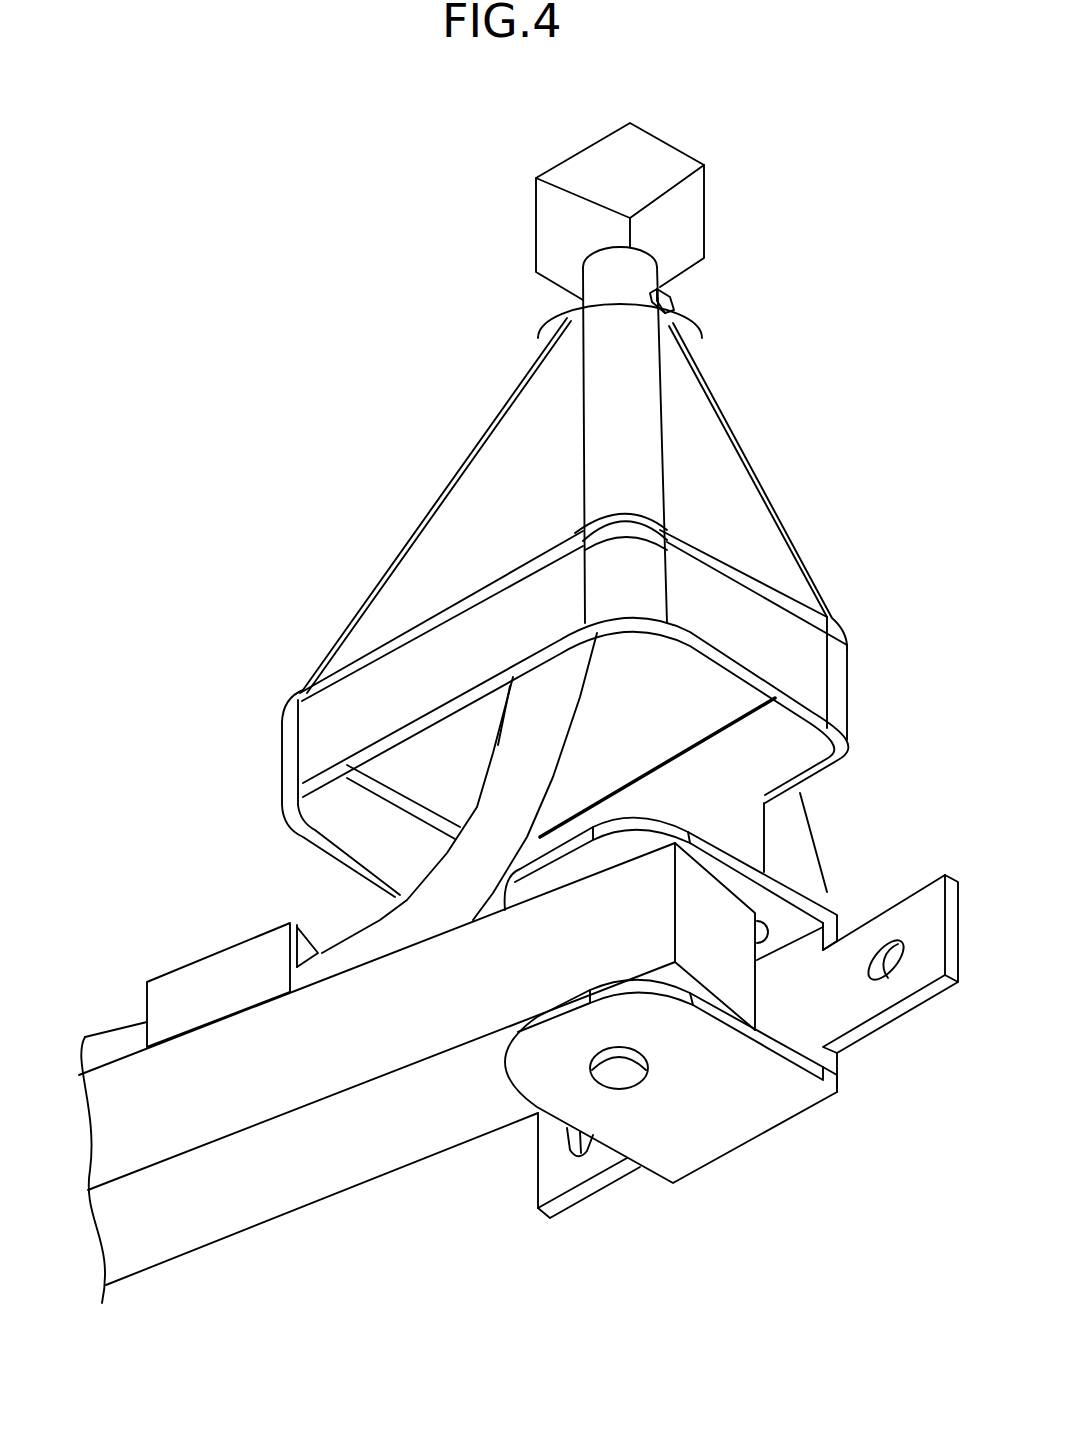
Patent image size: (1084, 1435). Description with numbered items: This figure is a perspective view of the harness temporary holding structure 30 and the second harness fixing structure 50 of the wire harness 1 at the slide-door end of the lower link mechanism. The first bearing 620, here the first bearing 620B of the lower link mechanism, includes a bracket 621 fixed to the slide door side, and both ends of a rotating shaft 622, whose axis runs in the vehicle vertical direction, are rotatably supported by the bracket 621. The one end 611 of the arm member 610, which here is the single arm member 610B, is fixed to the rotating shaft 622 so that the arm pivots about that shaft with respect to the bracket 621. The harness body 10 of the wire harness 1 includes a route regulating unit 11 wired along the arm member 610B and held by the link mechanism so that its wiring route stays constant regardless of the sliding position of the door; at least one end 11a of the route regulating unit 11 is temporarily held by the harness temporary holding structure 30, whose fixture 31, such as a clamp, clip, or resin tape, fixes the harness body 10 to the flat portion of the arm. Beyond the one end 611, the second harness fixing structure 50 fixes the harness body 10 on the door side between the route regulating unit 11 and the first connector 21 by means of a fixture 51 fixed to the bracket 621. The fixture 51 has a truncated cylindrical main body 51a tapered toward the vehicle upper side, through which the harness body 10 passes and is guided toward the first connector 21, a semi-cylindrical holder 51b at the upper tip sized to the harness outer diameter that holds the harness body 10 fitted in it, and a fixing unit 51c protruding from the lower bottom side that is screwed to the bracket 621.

The wire harness 1 is at (280, 140).
The harness body 10 is at (78, 1002).
The route regulating unit 11 is at (451, 1073).
The end of route regulating unit 11a is at (128, 1037).
The first connector 21 is at (578, 190).
The harness temporary holding structure 30 is at (218, 943).
The fixture 31 is at (207, 983).
The second harness fixing structure 50 is at (605, 618).
The fixture 51 is at (455, 372).
The main body 51a is at (470, 507).
The semi-cylindrical holder 51b is at (677, 302).
The fixing unit 51c is at (800, 848).
The arm member 610 is at (503, 1224).
The arm member 610B is at (380, 1236).
The one end of arm member 611 is at (483, 1113).
The first bearing 620 is at (731, 1040).
The first bearing 620B is at (820, 1138).
The bracket 621 is at (723, 1130).
The rotating shaft 622 is at (619, 1073).